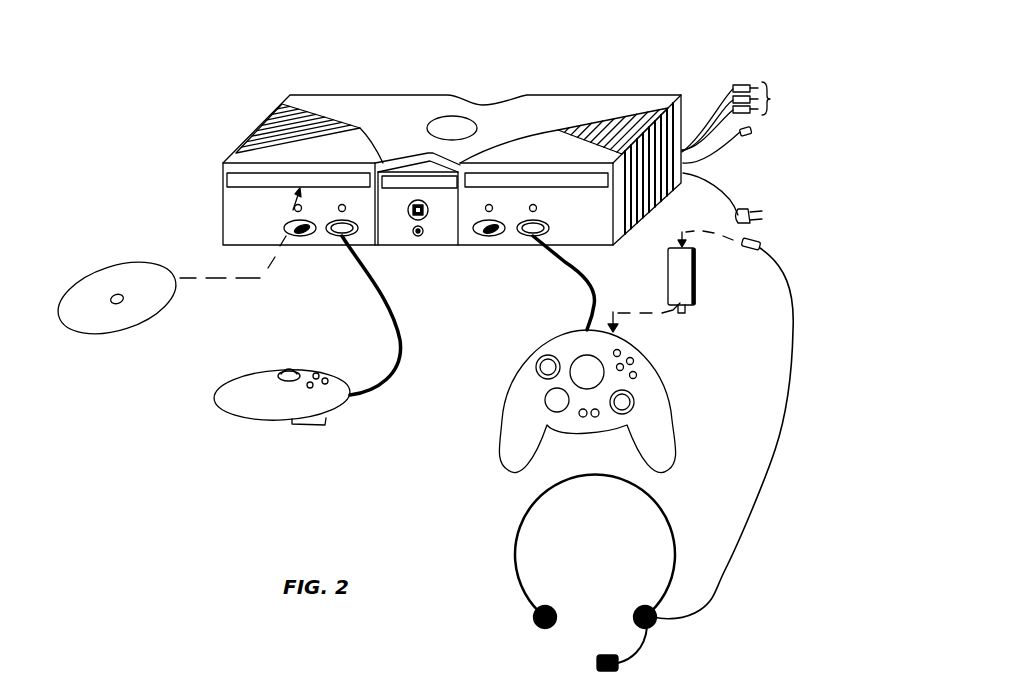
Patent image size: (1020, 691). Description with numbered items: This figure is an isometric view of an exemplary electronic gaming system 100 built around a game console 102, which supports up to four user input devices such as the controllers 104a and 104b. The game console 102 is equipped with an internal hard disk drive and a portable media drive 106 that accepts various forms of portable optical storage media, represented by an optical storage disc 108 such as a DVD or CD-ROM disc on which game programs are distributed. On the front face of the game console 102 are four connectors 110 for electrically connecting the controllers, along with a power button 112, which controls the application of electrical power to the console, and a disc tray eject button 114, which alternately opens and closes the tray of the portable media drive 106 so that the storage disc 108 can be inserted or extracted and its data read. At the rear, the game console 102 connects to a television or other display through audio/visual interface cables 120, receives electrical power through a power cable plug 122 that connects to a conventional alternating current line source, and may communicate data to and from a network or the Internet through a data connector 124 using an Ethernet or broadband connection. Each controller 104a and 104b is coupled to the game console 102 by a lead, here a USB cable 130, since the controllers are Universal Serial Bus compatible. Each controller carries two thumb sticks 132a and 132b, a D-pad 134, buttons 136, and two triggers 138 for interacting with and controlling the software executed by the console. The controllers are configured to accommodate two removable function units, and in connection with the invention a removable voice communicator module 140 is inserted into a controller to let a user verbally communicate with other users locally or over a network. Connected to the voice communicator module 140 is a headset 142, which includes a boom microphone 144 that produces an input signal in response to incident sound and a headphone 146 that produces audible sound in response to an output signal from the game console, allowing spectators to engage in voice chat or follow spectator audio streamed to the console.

The electronic gaming system 100 is at (577, 32).
The game console 102 is at (323, 95).
The controller 104a is at (283, 420).
The controller 104b is at (512, 463).
The portable media drive 106 is at (237, 180).
The optical storage disc 108 is at (130, 330).
The connectors 110 is at (338, 235).
The power button 112 is at (418, 236).
The disc tray eject button 114 is at (418, 200).
The audio/visual interface cables 120 is at (740, 83).
The power cable plug 122 is at (755, 208).
The data connector 124 is at (717, 148).
The USB cables 130 is at (402, 317).
The thumb stick 132a is at (537, 367).
The thumb stick 132b is at (635, 399).
The D-pad 134 is at (545, 400).
The buttons 136 is at (632, 360).
The triggers 138 is at (325, 422).
The voice communicator module 140 is at (697, 303).
The headset 142 is at (517, 577).
The boom microphone 144 is at (597, 668).
The headphone 146 is at (637, 613).